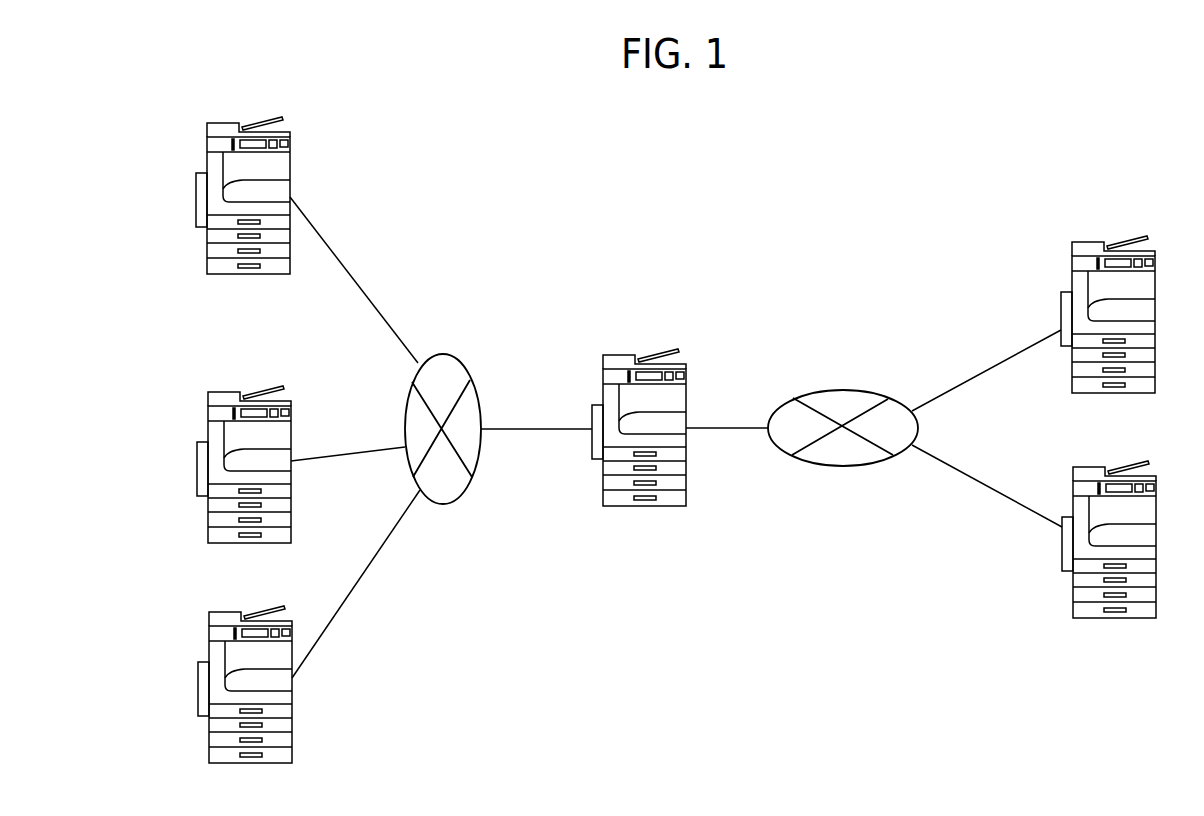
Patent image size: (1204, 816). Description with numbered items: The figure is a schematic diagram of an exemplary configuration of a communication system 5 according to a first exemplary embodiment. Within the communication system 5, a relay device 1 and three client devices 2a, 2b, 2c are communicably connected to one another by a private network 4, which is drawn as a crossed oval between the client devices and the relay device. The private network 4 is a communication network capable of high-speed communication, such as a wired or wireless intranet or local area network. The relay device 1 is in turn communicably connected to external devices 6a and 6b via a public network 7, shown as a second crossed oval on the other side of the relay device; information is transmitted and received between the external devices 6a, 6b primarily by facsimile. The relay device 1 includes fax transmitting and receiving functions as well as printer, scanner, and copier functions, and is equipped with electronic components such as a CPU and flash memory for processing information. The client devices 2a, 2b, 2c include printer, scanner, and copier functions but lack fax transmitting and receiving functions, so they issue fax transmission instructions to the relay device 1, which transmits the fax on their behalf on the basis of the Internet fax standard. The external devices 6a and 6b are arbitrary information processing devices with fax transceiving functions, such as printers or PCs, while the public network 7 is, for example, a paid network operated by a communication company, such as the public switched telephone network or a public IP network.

The relay device 1 is at (687, 390).
The client device 2a is at (196, 197).
The client device 2b is at (197, 466).
The client device 2c is at (198, 688).
The private network 4 is at (443, 354).
The communication system 5 is at (830, 172).
The external device 6a is at (1155, 288).
The external device 6b is at (1157, 513).
The public network 7 is at (843, 390).